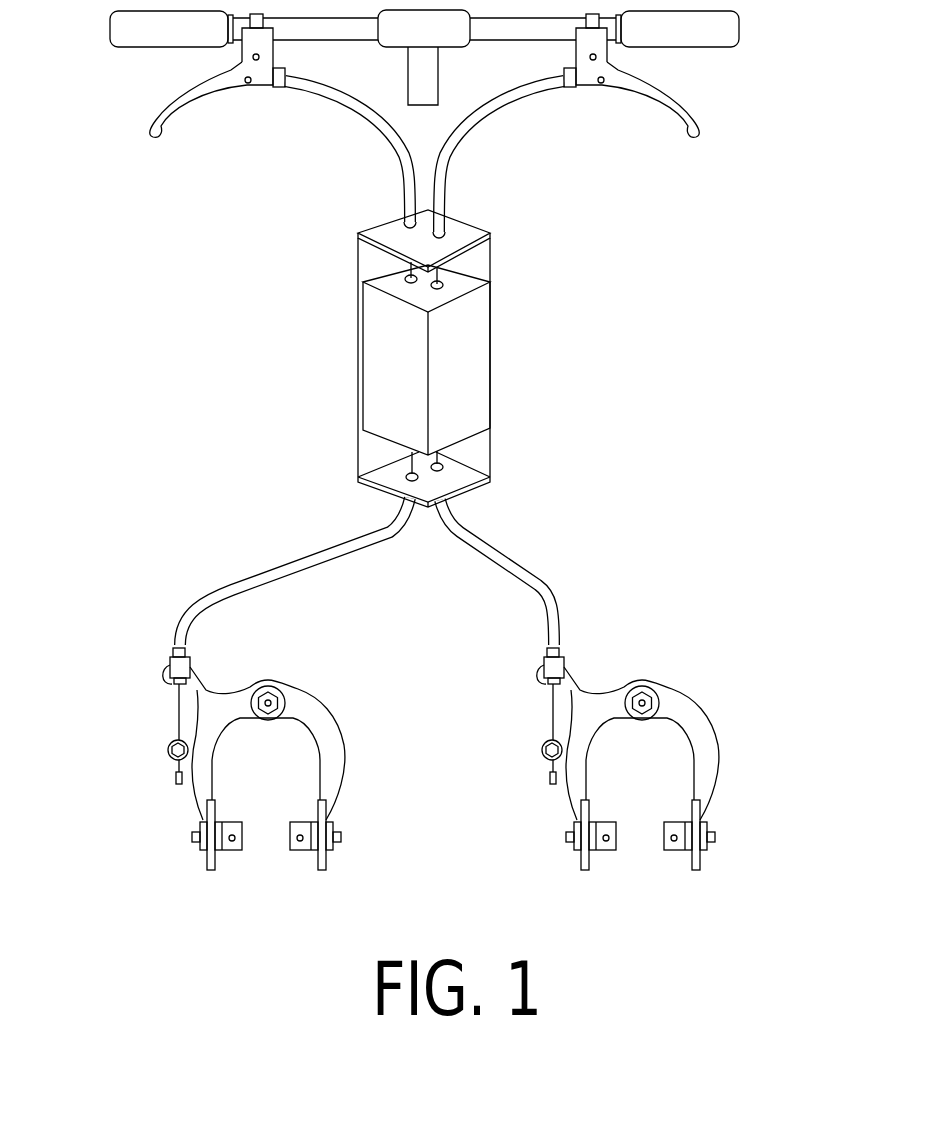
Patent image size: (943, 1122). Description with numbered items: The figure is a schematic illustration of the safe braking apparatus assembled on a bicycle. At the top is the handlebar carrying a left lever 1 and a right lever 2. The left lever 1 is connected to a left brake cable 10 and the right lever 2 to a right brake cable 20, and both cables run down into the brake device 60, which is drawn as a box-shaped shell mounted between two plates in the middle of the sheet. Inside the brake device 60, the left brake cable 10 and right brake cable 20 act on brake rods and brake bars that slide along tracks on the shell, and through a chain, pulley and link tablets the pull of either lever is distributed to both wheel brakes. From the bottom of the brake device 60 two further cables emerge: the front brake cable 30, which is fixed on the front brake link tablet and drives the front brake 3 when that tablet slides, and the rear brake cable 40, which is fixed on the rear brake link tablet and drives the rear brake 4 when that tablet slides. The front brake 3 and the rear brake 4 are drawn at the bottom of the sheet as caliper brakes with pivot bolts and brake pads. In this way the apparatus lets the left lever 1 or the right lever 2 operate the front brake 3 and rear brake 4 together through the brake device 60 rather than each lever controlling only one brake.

The left lever 1 is at (672, 90).
The right lever 2 is at (165, 98).
The left brake cable 10 is at (445, 262).
The right brake cable 20 is at (408, 265).
The brake device 60 is at (475, 350).
The front brake 3 is at (698, 722).
The rear brake 4 is at (305, 705).
The front brake cable 30 is at (552, 720).
The rear brake cable 40 is at (178, 718).